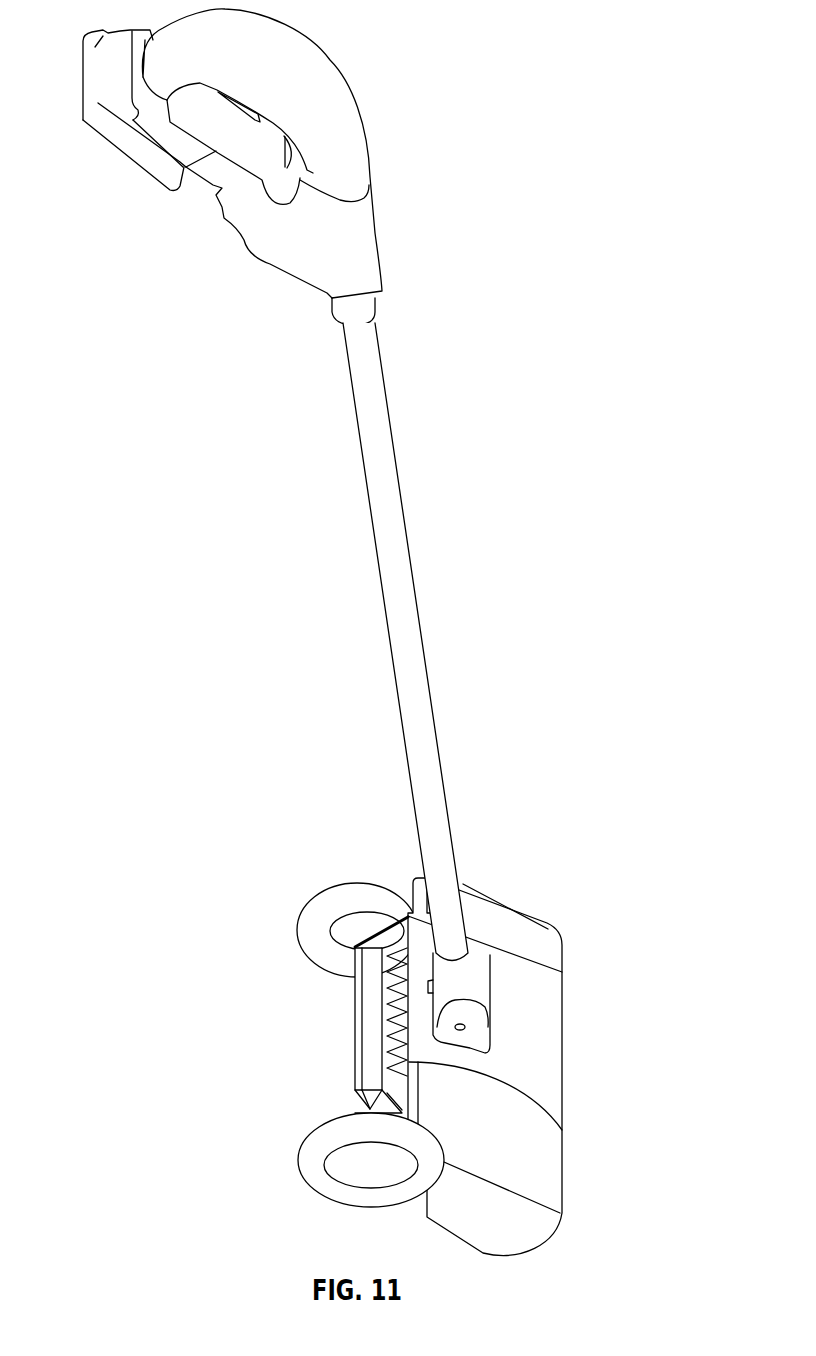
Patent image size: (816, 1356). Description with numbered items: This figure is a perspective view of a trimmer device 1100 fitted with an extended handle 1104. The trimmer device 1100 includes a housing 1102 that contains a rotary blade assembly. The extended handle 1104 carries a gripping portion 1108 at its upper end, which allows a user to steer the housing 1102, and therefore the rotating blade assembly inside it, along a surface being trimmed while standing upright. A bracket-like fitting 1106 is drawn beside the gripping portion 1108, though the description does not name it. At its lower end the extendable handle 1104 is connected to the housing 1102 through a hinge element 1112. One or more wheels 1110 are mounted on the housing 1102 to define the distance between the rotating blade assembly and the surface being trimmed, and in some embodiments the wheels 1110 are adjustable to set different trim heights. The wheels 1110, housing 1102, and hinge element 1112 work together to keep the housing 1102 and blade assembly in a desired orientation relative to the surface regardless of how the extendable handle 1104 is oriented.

The trimmer device 1100 is at (612, 284).
The housing 1102 is at (543, 1002).
The extended handle 1104 is at (410, 658).
The bracket 1106 is at (105, 96).
The gripping portion 1108 is at (334, 103).
The wheels 1110 is at (360, 900).
The hinge element 1112 is at (487, 962).